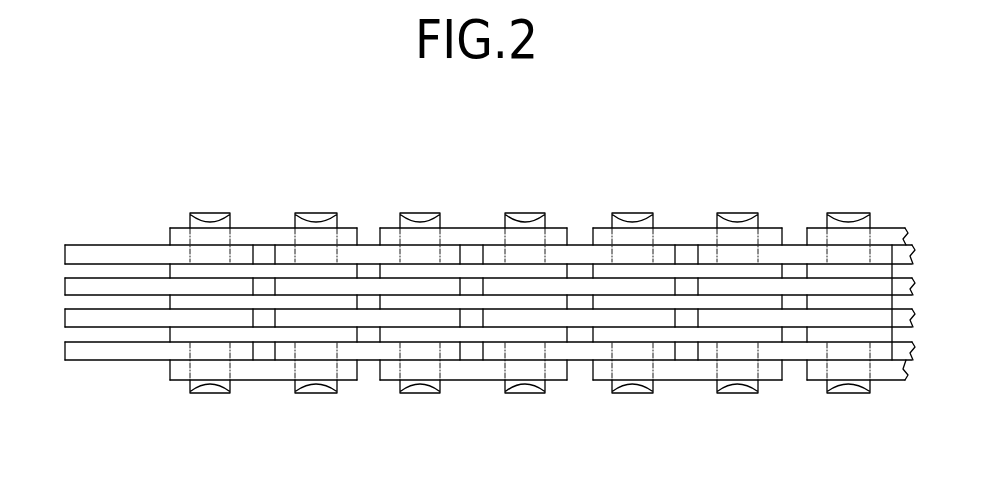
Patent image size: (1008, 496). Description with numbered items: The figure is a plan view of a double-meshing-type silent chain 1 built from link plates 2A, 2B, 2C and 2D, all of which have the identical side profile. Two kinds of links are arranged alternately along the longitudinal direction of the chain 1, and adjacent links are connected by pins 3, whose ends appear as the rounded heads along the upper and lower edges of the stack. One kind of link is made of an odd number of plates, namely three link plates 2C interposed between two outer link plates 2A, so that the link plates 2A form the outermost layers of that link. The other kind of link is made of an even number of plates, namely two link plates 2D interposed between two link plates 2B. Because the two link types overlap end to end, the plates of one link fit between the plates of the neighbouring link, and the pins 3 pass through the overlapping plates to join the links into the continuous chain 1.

The double-meshing-type silent chain 1 is at (795, 206).
The link plate 2A is at (258, 233).
The link plate 2B is at (333, 317).
The link plate 2C is at (470, 303).
The link plate 2D is at (370, 287).
The pin 3 is at (740, 392).